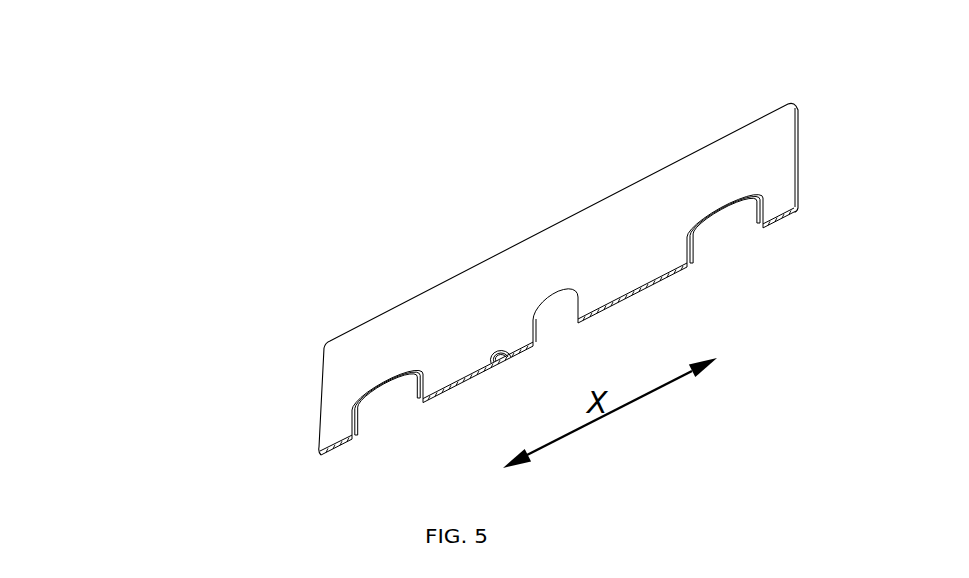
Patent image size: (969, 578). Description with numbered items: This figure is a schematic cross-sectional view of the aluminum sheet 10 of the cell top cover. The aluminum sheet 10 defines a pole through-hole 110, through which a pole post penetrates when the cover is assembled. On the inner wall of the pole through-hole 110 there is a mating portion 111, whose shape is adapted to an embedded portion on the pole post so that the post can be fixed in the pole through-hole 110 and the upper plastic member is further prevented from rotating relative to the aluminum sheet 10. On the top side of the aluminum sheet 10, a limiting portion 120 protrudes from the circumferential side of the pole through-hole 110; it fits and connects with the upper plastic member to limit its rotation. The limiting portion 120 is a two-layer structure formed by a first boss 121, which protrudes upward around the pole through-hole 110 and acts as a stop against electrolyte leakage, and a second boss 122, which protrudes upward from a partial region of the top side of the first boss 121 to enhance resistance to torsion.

The aluminum sheet 10 is at (477, 319).
The pole through-hole 110 is at (728, 230).
The mating portion 111 is at (703, 243).
The limiting portion 120 is at (148, 389).
The first boss 121 is at (367, 403).
The second boss 122 is at (350, 427).